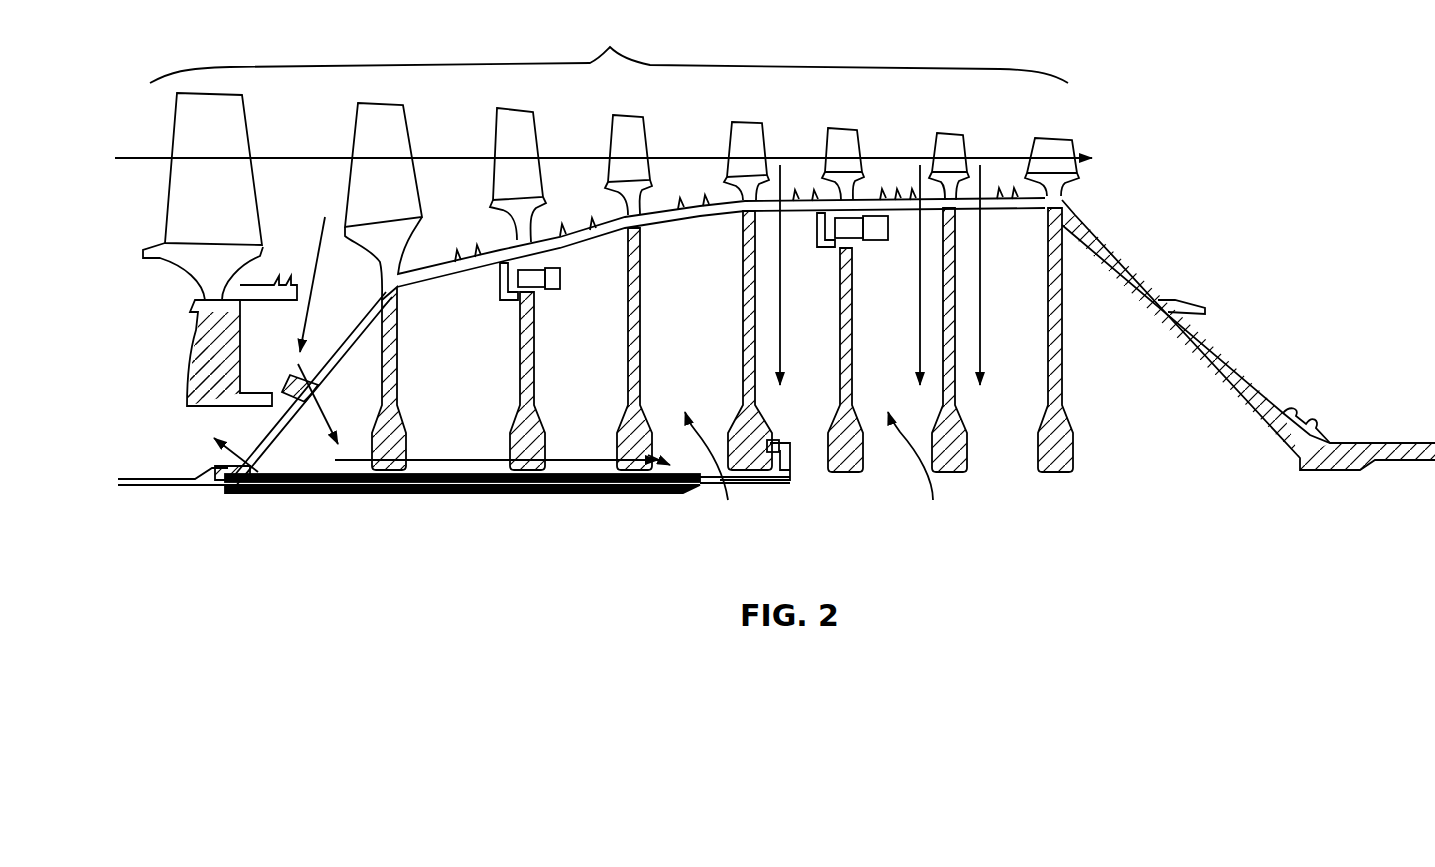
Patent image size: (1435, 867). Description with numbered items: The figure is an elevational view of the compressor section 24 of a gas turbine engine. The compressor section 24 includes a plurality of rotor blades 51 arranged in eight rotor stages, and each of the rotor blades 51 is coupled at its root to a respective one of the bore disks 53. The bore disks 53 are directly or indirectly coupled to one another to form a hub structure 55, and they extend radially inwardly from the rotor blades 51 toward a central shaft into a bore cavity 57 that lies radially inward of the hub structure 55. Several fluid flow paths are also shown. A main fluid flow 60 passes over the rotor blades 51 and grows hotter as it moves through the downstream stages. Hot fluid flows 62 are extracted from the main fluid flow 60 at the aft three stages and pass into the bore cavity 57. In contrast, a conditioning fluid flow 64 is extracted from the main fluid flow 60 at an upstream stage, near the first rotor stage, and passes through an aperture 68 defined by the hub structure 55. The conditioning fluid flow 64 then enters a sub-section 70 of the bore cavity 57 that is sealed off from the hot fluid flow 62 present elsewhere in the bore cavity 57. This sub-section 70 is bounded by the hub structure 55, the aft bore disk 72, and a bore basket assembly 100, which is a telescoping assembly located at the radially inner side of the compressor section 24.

The compressor section 24 is at (148, 52).
The rotor blades 51 is at (609, 51).
The main fluid flow 60 is at (288, 156).
The conditioning fluid flow 64 is at (317, 250).
The aperture 68 is at (300, 383).
The hub structure 55 is at (434, 262).
The bore disks 53 is at (398, 316).
The aft bore disk 72 is at (745, 278).
The hot fluid flows 62 is at (982, 283).
The sub-section 70 is at (716, 473).
The bore cavity 57 is at (919, 473).
The bore basket assembly 100 is at (346, 503).